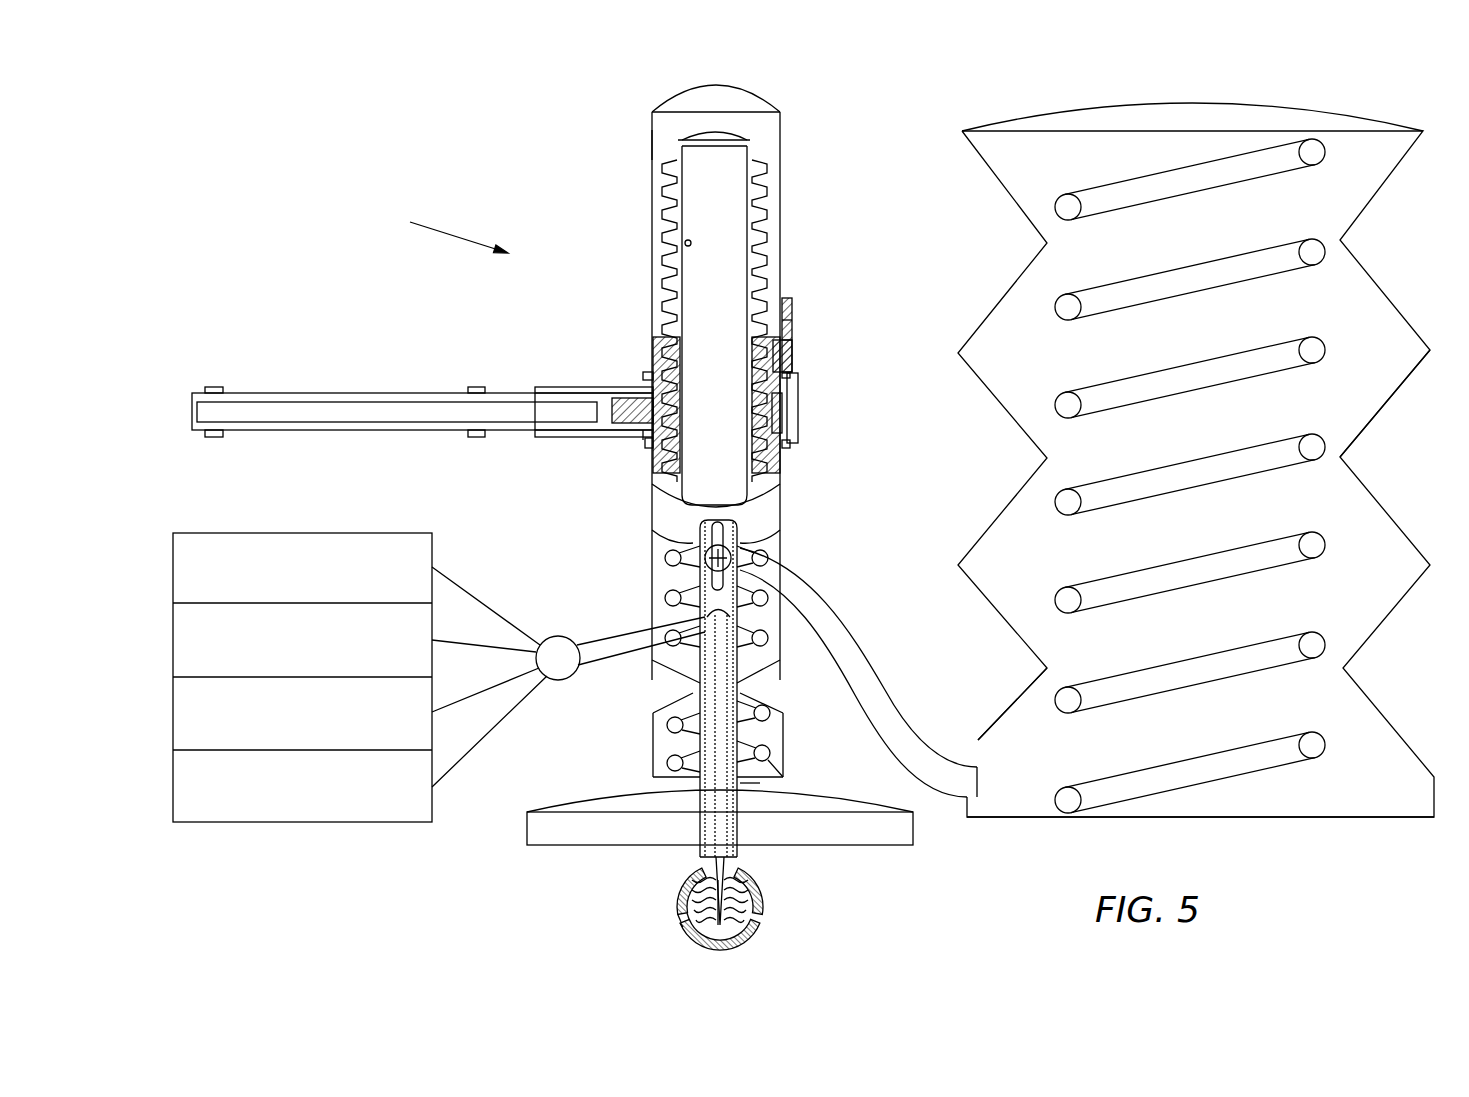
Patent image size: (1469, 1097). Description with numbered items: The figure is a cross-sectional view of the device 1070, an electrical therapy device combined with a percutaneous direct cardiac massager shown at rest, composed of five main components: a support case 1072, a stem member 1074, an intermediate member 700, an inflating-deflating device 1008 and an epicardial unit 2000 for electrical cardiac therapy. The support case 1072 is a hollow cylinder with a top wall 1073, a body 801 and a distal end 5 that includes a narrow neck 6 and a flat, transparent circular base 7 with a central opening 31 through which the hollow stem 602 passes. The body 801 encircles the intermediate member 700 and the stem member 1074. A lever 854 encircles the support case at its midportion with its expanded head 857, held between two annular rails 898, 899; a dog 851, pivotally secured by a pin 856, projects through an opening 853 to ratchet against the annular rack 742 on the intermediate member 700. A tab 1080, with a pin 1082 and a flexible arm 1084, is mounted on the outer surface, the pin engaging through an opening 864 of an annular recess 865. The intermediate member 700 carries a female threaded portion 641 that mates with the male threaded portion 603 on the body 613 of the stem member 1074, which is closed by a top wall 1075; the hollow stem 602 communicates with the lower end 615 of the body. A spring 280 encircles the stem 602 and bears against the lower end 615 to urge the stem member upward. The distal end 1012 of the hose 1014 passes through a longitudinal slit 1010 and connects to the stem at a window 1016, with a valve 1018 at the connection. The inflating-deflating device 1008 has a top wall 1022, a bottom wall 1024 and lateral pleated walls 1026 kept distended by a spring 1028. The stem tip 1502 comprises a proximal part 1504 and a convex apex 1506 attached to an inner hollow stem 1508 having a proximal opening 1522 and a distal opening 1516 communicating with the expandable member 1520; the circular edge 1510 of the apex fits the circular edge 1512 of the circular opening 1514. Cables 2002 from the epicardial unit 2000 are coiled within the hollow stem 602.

The body 801 is at (650, 223).
The top wall 1073 is at (670, 107).
The support case 1072 is at (650, 148).
The male threaded portion 603 is at (760, 162).
The top wall 1075 is at (727, 138).
The stem member 1074 is at (748, 200).
The body 613 is at (688, 243).
The device 1070 is at (430, 231).
The annular recess 865 is at (653, 340).
The intermediate member 700 is at (780, 457).
The flexible arm 1084 is at (790, 298).
The opening 864 is at (792, 322).
The tab 1080 is at (793, 340).
The pin 1082 is at (793, 352).
The annular rail 898 is at (650, 373).
The expanded head 857 is at (798, 392).
The annular rack 742 is at (773, 407).
The annular rail 899 is at (648, 450).
The lever 854 is at (333, 432).
The dog 851 is at (620, 402).
The pin 856 is at (540, 435).
The opening 853 is at (648, 443).
The female threaded portion 641 is at (652, 475).
The lower end 615 is at (657, 513).
The distal end 5 is at (695, 810).
The longitudinal slit 1010 is at (742, 538).
The distal end 1012 is at (742, 548).
The valve 1018 is at (705, 555).
The window 1016 is at (703, 575).
The hollow stem 602 is at (622, 828).
The spring 280 is at (770, 758).
The cables 2002 is at (600, 642).
The epicardial unit 2000 is at (249, 846).
The inner hollow stem 1508 is at (838, 832).
The base 7 is at (578, 812).
The narrow neck 6 is at (760, 783).
The central opening 31 is at (700, 845).
The stem tip 1502 is at (690, 875).
The proximal part 1504 is at (752, 892).
The convex apex 1506 is at (750, 942).
The expandable member 1520 is at (738, 897).
The distal opening 1516 is at (742, 913).
The circular edge 1512 is at (683, 913).
The circular opening 1514 is at (688, 920).
The circular edge 1510 is at (683, 927).
The hose 1014 is at (870, 650).
The inflating-deflating device 1008 is at (1388, 288).
The top wall 1022 is at (1078, 125).
The lateral pleated walls 1026 is at (1390, 508).
The proximal opening 1522 is at (1017, 693).
The bottom wall 1024 is at (1268, 817).
The spring 1028 is at (1255, 653).